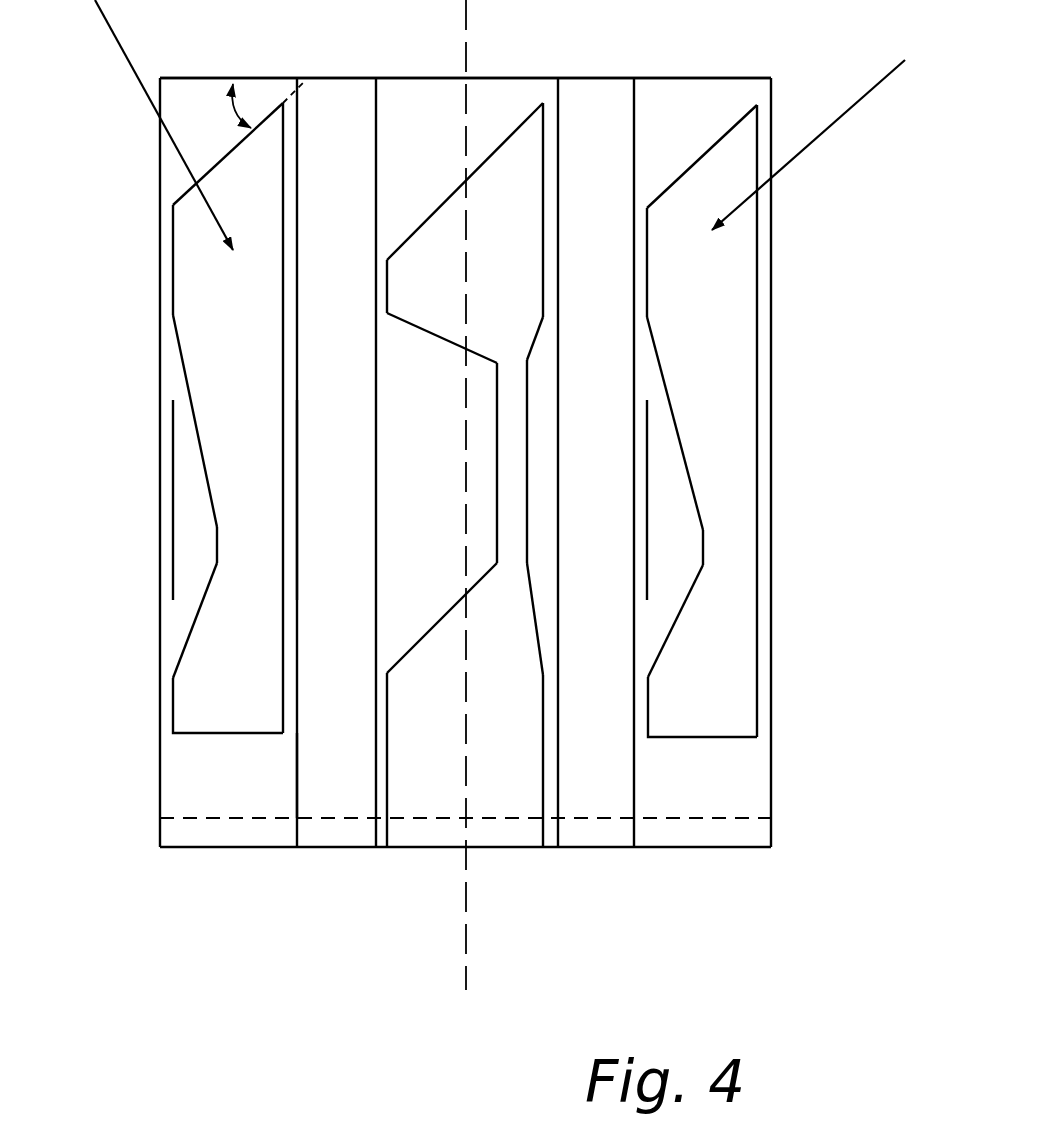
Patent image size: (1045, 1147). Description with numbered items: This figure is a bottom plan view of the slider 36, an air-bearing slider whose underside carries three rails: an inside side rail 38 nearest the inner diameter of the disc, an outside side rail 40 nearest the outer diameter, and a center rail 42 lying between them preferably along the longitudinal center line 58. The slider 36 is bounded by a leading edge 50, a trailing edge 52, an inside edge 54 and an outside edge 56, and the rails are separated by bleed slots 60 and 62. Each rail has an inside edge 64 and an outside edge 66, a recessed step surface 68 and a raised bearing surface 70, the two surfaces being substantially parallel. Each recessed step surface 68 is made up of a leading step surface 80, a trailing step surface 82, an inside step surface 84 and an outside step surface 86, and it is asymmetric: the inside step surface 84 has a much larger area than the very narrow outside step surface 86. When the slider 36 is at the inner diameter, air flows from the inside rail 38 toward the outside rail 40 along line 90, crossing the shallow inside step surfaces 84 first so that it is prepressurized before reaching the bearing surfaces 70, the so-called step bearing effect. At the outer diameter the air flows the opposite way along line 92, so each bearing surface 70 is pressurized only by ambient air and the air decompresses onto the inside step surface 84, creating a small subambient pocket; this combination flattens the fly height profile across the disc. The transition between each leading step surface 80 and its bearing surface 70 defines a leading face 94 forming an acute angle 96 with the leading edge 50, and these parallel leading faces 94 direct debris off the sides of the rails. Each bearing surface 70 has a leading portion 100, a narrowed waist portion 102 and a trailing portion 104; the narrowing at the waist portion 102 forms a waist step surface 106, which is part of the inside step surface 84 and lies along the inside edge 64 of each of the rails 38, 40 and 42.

The slider 36 is at (323, 905).
The inside side rail 38 is at (228, 850).
The outside side rail 40 is at (703, 850).
The center rail 42 is at (413, 850).
The leading edge 50 is at (510, 78).
The trailing edge 52 is at (512, 848).
The inside edge 54 is at (160, 788).
The outside edge 56 is at (773, 800).
The longitudinal center line 58 is at (466, 960).
The bleed slot 60 is at (333, 78).
The bleed slot 62 is at (602, 78).
The inside edge of rail 64 is at (160, 756).
The outside edge of rail 66 is at (297, 755).
The recessed step surface 68 is at (185, 425).
The raised bearing surface 70 is at (212, 365).
The leading step surface 80 is at (212, 105).
The trailing step surface 82 is at (196, 800).
The inside step surface 84 is at (182, 492).
The outside step surface 86 is at (290, 488).
The air flow line at inner diameter 90 is at (120, 42).
The air flow line at outer diameter 92 is at (853, 110).
The leading face 94 is at (225, 150).
The acute angle 96 is at (248, 103).
The leading portion 100 is at (210, 275).
The waist portion 102 is at (232, 535).
The trailing portion 104 is at (193, 670).
The waist step surface 106 is at (187, 570).